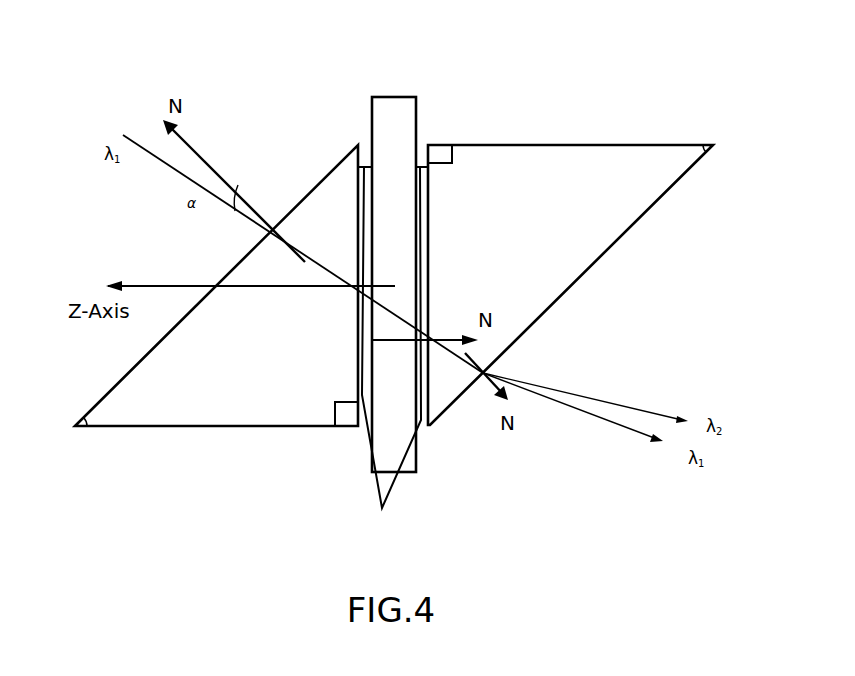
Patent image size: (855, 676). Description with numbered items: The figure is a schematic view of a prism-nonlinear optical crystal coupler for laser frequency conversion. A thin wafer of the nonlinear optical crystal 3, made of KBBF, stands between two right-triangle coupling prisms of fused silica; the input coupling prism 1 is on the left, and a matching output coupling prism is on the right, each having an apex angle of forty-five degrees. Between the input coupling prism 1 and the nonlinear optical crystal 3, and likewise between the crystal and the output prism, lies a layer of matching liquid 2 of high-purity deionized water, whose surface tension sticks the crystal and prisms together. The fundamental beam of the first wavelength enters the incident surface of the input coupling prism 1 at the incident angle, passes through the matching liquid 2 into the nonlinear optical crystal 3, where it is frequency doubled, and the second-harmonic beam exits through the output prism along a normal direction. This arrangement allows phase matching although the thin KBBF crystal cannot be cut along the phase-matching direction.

The input coupling prism 1 is at (399, 316).
The matching liquid 2 is at (393, 356).
The nonlinear optical crystal 3 is at (397, 115).